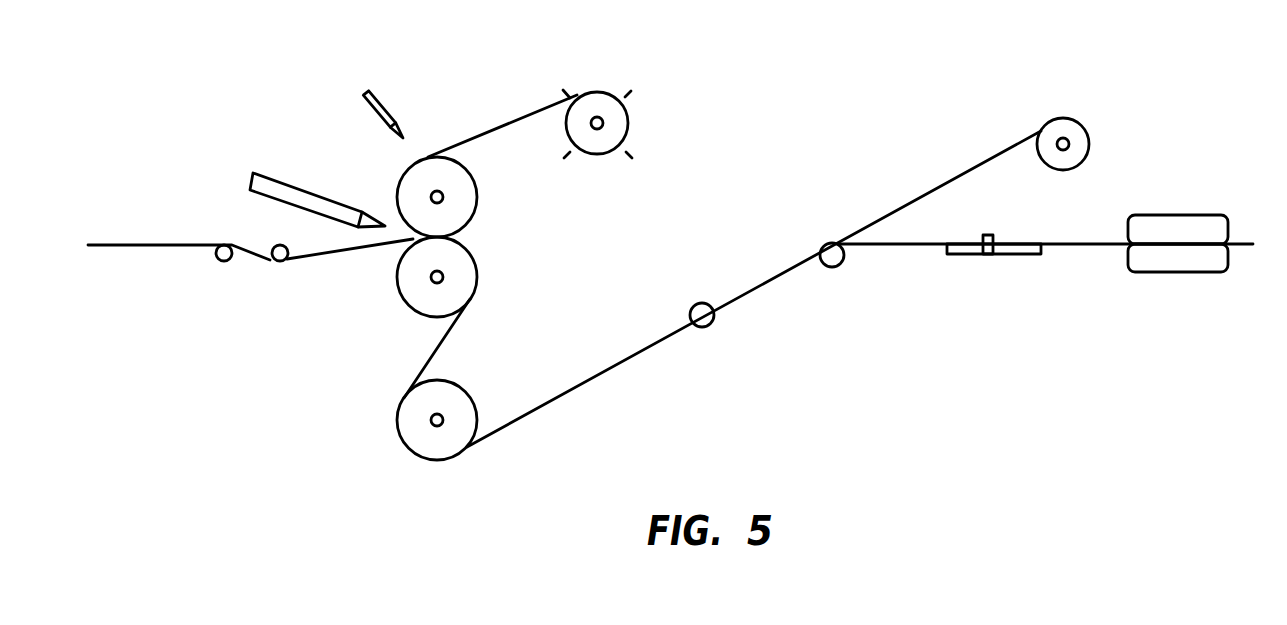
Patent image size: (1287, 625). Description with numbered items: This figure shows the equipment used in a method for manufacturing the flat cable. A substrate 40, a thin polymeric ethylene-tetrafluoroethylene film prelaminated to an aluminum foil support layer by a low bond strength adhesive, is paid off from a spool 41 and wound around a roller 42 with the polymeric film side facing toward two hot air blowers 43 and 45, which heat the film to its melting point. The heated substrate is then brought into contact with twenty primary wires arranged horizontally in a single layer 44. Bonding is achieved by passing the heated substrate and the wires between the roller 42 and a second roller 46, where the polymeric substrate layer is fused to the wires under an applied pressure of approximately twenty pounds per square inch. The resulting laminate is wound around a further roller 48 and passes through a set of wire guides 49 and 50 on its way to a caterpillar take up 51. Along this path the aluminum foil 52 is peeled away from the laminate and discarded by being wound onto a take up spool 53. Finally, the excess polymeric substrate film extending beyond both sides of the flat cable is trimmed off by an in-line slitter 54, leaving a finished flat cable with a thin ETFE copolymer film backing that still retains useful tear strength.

The substrate 40 is at (528, 112).
The spool 41 is at (622, 120).
The roller 42 is at (465, 198).
The hot air blower 43 is at (380, 102).
The single layer of primary wires 44 is at (308, 258).
The hot air blower 45 is at (273, 173).
The roller 46 is at (465, 282).
The roller 48 is at (465, 407).
The wire guide 49 is at (708, 322).
The wire guide 50 is at (840, 263).
The caterpillar take up 51 is at (1170, 272).
The aluminum foil 52 is at (930, 185).
The take up spool 53 is at (1090, 150).
The in-line slitter 54 is at (1015, 255).